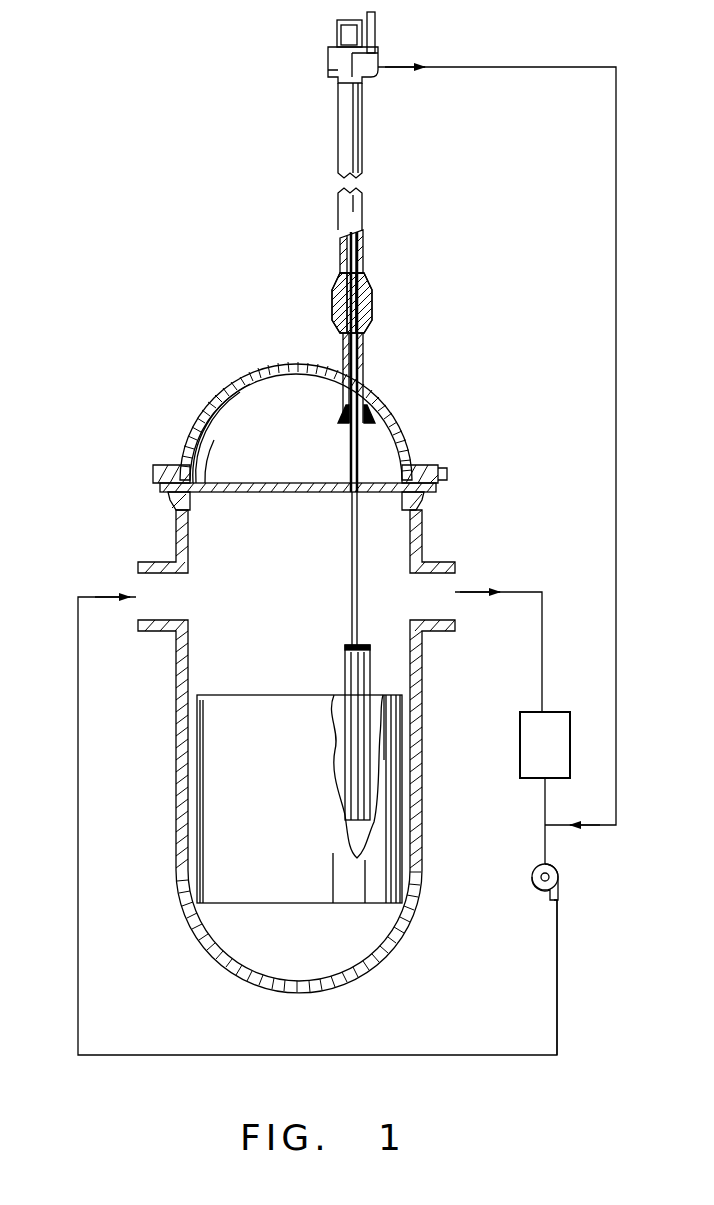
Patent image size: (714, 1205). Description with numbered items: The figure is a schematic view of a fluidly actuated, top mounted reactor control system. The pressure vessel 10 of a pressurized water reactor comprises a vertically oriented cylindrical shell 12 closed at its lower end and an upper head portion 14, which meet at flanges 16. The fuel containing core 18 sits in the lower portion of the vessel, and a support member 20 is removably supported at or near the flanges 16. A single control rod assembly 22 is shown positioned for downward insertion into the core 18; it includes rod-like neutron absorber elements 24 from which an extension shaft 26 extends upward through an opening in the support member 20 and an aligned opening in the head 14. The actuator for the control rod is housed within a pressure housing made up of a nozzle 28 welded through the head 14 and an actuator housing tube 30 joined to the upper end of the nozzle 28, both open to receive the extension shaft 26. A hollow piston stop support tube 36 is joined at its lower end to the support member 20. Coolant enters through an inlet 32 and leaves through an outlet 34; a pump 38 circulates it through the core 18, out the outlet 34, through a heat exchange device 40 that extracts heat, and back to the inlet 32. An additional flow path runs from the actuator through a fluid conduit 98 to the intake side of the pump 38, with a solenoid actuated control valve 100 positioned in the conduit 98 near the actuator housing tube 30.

The pressure vessel 10 is at (135, 527).
The cylindrical shell 12 is at (420, 795).
The upper head portion 14 is at (400, 420).
The flanges 16 is at (445, 470).
The fuel containing core 18 is at (243, 695).
The support member 20 is at (278, 483).
The control rod assembly 22 is at (343, 640).
The neutron absorber elements 24 is at (355, 740).
The extension shaft 26 is at (358, 262).
The nozzle 28 is at (364, 372).
The actuator housing tube 30 is at (365, 150).
The inlet 32 is at (147, 630).
The outlet 34 is at (441, 618).
The piston stop support tube 36 is at (350, 453).
The pump 38 is at (560, 880).
The heat exchange device 40 is at (520, 735).
The fluid conduit 98 is at (505, 67).
The control valve 100 is at (378, 50).